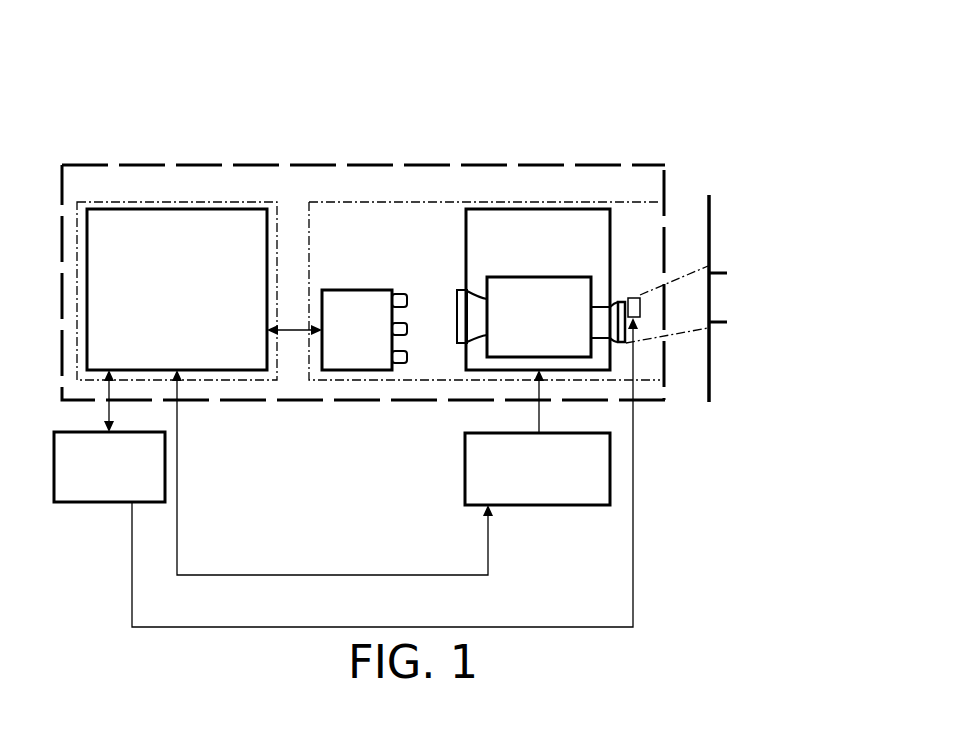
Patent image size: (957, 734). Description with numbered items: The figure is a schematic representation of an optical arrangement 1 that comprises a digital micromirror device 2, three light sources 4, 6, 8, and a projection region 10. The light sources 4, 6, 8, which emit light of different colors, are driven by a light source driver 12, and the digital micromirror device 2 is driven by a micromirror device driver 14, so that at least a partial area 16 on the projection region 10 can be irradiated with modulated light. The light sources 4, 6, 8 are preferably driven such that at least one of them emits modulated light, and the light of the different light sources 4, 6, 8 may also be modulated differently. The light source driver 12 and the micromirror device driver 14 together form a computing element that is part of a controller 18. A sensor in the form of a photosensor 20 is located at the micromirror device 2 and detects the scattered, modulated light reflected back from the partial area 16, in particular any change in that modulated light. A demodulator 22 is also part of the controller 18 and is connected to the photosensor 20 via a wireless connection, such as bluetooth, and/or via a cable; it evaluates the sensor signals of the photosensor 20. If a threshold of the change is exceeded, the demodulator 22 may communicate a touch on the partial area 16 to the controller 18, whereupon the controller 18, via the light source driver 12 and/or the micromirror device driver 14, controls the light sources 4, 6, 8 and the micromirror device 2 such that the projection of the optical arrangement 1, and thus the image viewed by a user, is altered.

The optical arrangement 1 is at (256, 122).
The digital micromirror device 2 is at (541, 268).
The light source 4 is at (401, 360).
The light source 6 is at (407, 330).
The light source 8 is at (397, 302).
The projection region 10 is at (720, 371).
The light source driver 12 is at (340, 357).
The micromirror device driver 14 is at (538, 475).
The partial area 16 is at (720, 290).
The controller 18 is at (151, 228).
The photosensor 20 is at (641, 311).
The demodulator 22 is at (95, 485).